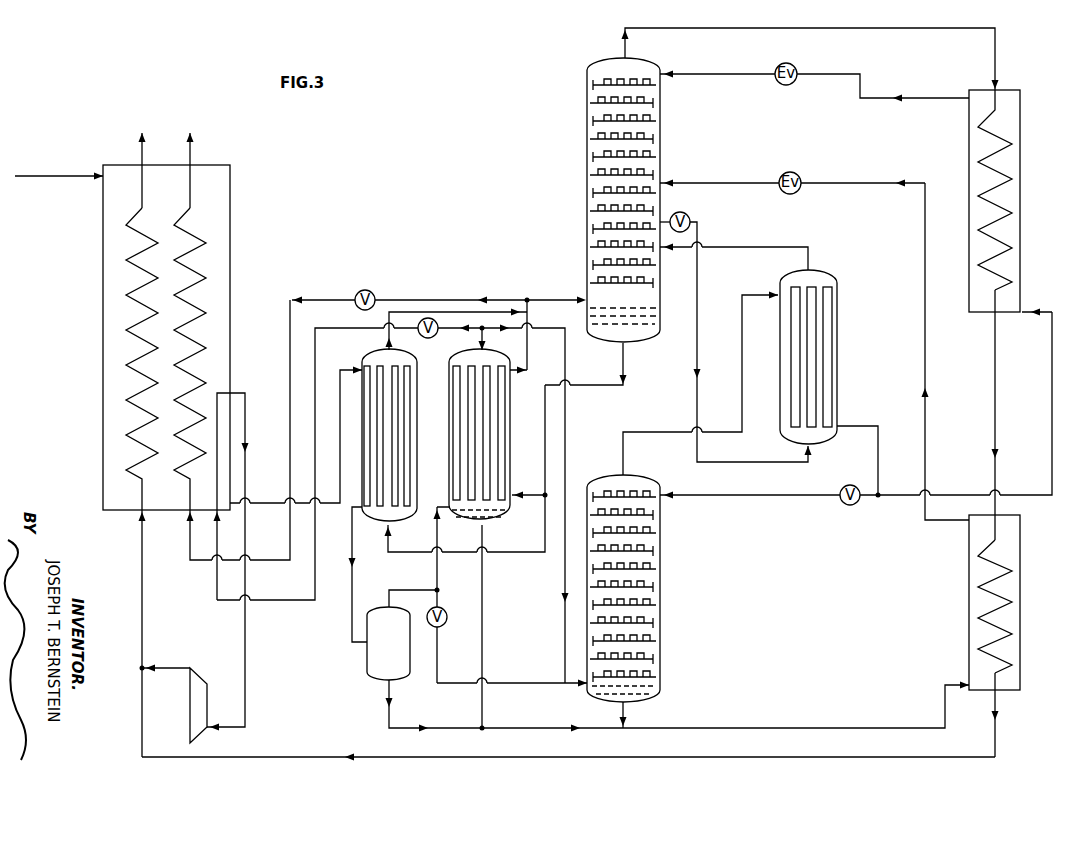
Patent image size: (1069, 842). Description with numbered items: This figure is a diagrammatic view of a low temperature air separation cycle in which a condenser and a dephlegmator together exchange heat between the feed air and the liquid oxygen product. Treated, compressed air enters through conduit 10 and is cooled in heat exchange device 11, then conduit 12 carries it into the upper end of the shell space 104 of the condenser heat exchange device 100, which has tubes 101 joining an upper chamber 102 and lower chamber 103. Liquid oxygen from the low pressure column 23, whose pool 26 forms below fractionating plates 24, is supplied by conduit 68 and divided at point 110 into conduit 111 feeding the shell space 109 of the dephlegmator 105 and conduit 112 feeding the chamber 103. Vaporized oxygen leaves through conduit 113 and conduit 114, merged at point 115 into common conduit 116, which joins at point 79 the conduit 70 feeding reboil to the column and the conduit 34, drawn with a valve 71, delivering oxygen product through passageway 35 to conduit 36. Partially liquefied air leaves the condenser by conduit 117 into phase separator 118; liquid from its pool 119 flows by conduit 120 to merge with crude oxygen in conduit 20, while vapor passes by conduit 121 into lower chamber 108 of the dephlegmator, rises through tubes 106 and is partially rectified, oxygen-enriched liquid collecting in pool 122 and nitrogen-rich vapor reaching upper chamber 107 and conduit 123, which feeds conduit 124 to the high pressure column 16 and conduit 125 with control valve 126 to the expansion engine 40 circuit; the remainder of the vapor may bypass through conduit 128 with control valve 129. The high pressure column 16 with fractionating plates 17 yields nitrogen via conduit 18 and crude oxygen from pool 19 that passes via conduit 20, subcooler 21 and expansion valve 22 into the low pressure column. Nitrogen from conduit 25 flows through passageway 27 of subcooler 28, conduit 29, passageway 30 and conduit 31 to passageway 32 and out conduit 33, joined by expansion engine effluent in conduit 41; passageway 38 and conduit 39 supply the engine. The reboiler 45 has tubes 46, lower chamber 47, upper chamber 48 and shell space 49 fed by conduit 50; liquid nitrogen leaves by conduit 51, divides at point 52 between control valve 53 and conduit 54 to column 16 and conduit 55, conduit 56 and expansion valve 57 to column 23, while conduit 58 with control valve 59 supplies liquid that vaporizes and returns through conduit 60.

The conduit 10 is at (48, 174).
The heat exchange device 11 is at (94, 318).
The conduit 12 is at (278, 504).
The high pressure column 16 is at (658, 604).
The fractionating plates 17 is at (658, 550).
The conduit 18 is at (623, 474).
The pool 19 is at (654, 704).
The conduit 20 is at (874, 182).
The subcooler 21 is at (968, 586).
The expansion valve 22 is at (804, 178).
The low pressure column 23 is at (586, 124).
The fractionating plates 24 is at (586, 214).
The conduit 25 is at (730, 28).
The pool 26 is at (642, 320).
The passageway 27 is at (1006, 156).
The subcooler 28 is at (968, 139).
The conduit 29 is at (994, 376).
The passageway 30 is at (1000, 578).
The conduit 31 is at (142, 540).
The passageway 32 is at (126, 423).
The conduit 33 is at (138, 150).
The conduit 34 is at (190, 546).
The passageway 35 is at (202, 274).
The conduit 36 is at (190, 150).
The passageway 38 is at (218, 476).
The conduit 39 is at (246, 444).
The expansion engine 40 is at (203, 678).
The conduit 41 is at (172, 668).
The reboiler 45 is at (837, 340).
The tubes 46 is at (836, 314).
The lower chamber 47 is at (814, 440).
The upper chamber 48 is at (814, 264).
The shell space 49 is at (834, 380).
The conduit 50 is at (742, 350).
The conduit 51 is at (878, 458).
The point 52 is at (878, 496).
The control valve 53 is at (840, 492).
The conduit 54 is at (762, 494).
The conduit 55 is at (1052, 378).
The conduit 56 is at (856, 76).
The expansion valve 57 is at (796, 66).
The conduit 58 is at (698, 316).
The control valve 59 is at (691, 220).
The conduit 60 is at (766, 246).
The conduit 68 is at (628, 352).
The conduit 70 is at (568, 298).
The valve 71 is at (365, 290).
The point 79 is at (527, 298).
The heat exchange device 100 is at (360, 360).
The tubes 101 is at (410, 432).
The upper chamber 102 is at (382, 352).
The lower chamber 103 is at (386, 524).
The shell space 104 is at (412, 378).
The dephlegmator 105 is at (522, 402).
The tubes 106 is at (504, 430).
The upper chamber 107 is at (480, 356).
The lower chamber 108 is at (498, 514).
The shell space 109 is at (506, 456).
The point 110 is at (565, 498).
The conduit 111 is at (536, 492).
The conduit 112 is at (422, 556).
The conduit 113 is at (527, 352).
The conduit 114 is at (428, 300).
The point 115 is at (528, 328).
The common conduit 116 is at (532, 313).
The conduit 117 is at (348, 594).
The phase separator 118 is at (390, 606).
The pool 119 is at (366, 666).
The conduit 120 is at (462, 724).
The conduit 121 is at (438, 566).
The pool 122 is at (482, 524).
The conduit 123 is at (478, 346).
The conduit 124 is at (566, 372).
The conduit 125 is at (232, 544).
The control valve 126 is at (428, 336).
The conduit 128 is at (438, 666).
The control valve 129 is at (444, 618).